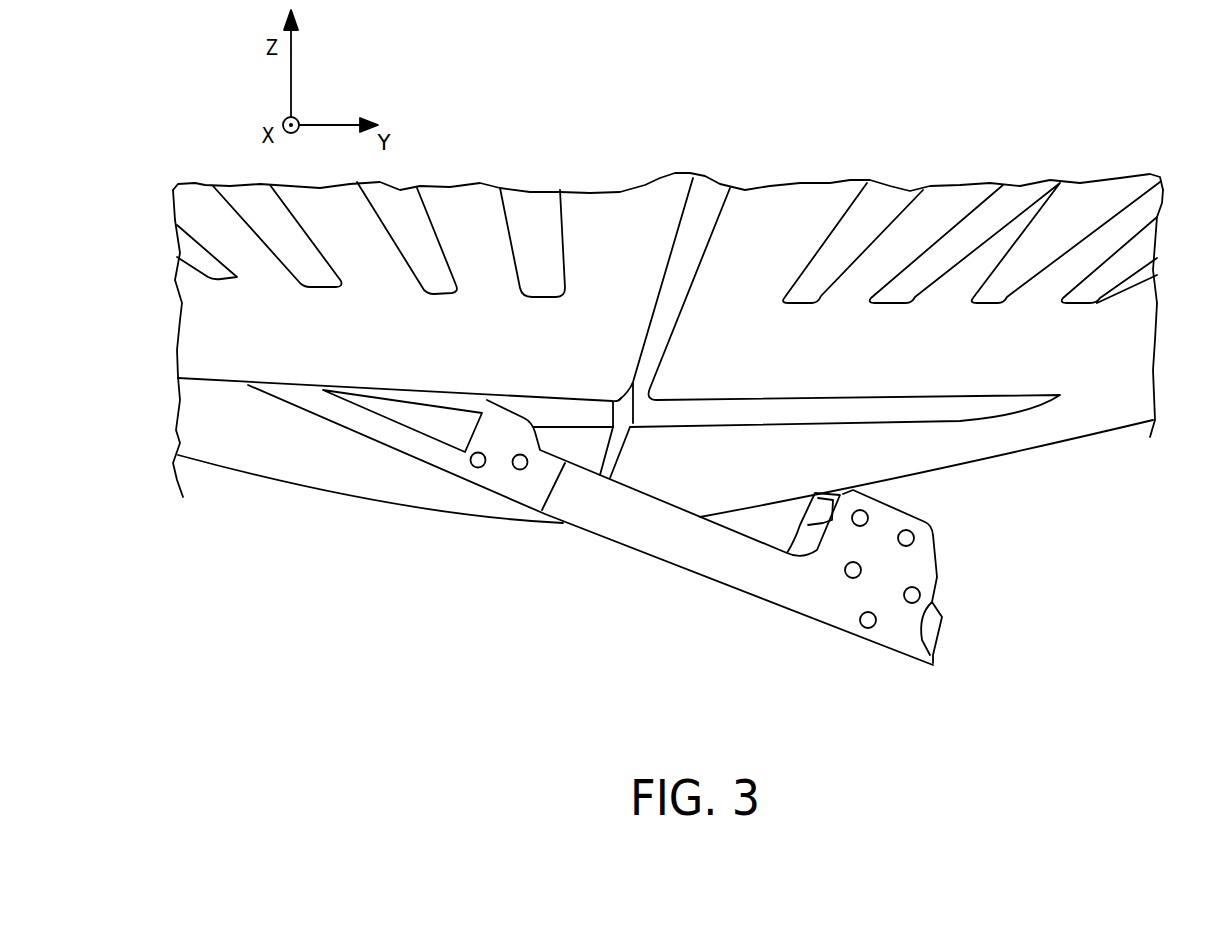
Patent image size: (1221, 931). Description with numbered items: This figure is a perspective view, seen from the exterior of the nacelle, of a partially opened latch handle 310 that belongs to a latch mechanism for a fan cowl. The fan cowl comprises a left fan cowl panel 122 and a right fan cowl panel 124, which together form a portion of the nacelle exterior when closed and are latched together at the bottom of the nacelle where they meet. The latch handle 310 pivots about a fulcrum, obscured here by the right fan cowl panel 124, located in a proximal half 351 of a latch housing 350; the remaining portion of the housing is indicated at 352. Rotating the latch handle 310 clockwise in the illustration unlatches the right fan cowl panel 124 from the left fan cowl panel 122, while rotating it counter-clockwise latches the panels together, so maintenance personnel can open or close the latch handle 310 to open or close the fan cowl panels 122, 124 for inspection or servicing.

The left fan cowl panel 122 is at (1102, 437).
The right fan cowl panel 124 is at (387, 507).
The latch handle 310 is at (677, 570).
The latch housing 350 is at (692, 351).
The proximal half of latch housing 351 is at (472, 398).
The blade member 352 is at (757, 403).